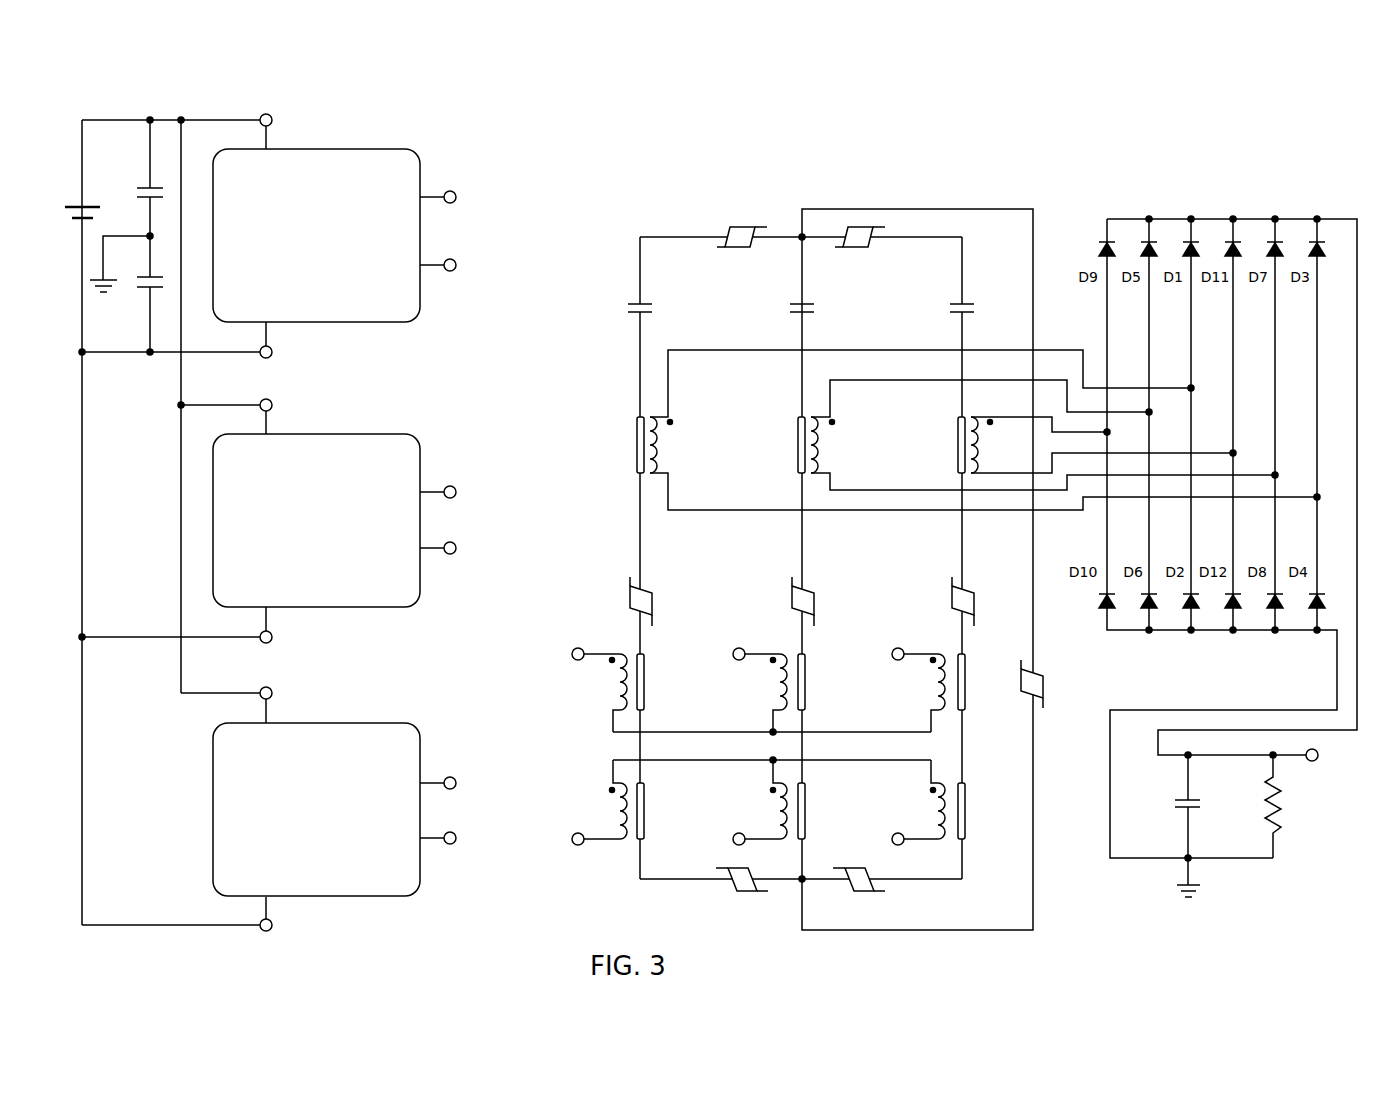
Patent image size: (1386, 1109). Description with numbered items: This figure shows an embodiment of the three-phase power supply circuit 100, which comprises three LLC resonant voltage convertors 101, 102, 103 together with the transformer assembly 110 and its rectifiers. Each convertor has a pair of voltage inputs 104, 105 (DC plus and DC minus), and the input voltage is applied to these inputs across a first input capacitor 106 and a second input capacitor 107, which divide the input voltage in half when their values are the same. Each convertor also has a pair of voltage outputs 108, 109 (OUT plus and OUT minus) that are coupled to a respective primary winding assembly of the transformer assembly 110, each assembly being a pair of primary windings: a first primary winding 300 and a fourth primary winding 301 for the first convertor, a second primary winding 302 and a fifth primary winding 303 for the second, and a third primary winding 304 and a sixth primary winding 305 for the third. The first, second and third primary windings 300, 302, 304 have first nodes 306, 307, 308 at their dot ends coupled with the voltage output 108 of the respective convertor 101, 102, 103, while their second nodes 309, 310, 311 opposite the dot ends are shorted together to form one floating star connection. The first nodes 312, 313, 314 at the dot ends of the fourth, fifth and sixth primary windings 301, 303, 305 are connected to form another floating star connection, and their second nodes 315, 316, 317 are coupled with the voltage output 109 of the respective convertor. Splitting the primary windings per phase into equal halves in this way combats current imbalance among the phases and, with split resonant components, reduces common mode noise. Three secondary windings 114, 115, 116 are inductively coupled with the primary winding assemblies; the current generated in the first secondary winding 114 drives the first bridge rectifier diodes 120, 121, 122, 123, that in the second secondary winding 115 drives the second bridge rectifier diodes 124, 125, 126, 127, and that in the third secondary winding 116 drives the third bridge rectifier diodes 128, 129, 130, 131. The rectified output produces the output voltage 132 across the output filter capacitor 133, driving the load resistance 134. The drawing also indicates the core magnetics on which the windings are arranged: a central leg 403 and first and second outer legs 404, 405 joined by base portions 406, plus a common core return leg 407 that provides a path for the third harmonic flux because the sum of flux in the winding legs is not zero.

The three-phase power supply circuit 100 is at (84, 84).
The LLC resonant voltage convertor 101 is at (340, 149).
The LLC resonant voltage convertor 102 is at (340, 434).
The LLC resonant voltage convertor 103 is at (340, 723).
The voltage input 104 is at (273, 123).
The voltage input 105 is at (273, 354).
The capacitor C1 106 is at (146, 186).
The capacitor C2 107 is at (146, 289).
The voltage output 108 is at (450, 191).
The voltage output 109 is at (452, 271).
The transformer assembly 110 is at (797, 158).
The secondary winding S1 114 is at (698, 447).
The secondary winding S2 115 is at (858, 447).
The secondary winding S3 116 is at (1006, 436).
The diode D1 120 is at (1189, 240).
The diode D2 121 is at (1189, 610).
The diode D3 122 is at (1314, 240).
The diode D4 123 is at (1315, 610).
The diode D5 124 is at (1146, 240).
The diode D6 125 is at (1147, 610).
The diode D7 126 is at (1272, 240).
The diode D8 127 is at (1273, 610).
The diode D9 128 is at (1105, 240).
The diode D10 129 is at (1105, 610).
The diode D11 130 is at (1230, 240).
The diode D12 131 is at (1231, 610).
The output voltage VOUT 132 is at (1320, 757).
The output filter capacitor C3 133 is at (1184, 800).
The load resistance RLOAD 134 is at (1280, 830).
The primary winding P1 300 is at (620, 683).
The primary winding P4 301 is at (620, 812).
The primary winding P2 302 is at (780, 683).
The primary winding P5 303 is at (780, 812).
The primary winding P3 304 is at (938, 683).
The primary winding P6 305 is at (938, 812).
The first node 306 is at (614, 650).
The first node 307 is at (774, 650).
The first node 308 is at (934, 650).
The second node 309 is at (613, 713).
The second node 310 is at (773, 713).
The second node 311 is at (931, 713).
The first node 312 is at (612, 785).
The first node 313 is at (772, 785).
The first node 314 is at (930, 785).
The second node 315 is at (613, 841).
The second node 316 is at (774, 841).
The second node 317 is at (933, 841).
The central leg 403 is at (816, 600).
The first outer leg 404 is at (653, 600).
The second outer leg 405 is at (976, 600).
The base portion 406 is at (741, 226).
The common core return leg 407 is at (1021, 680).